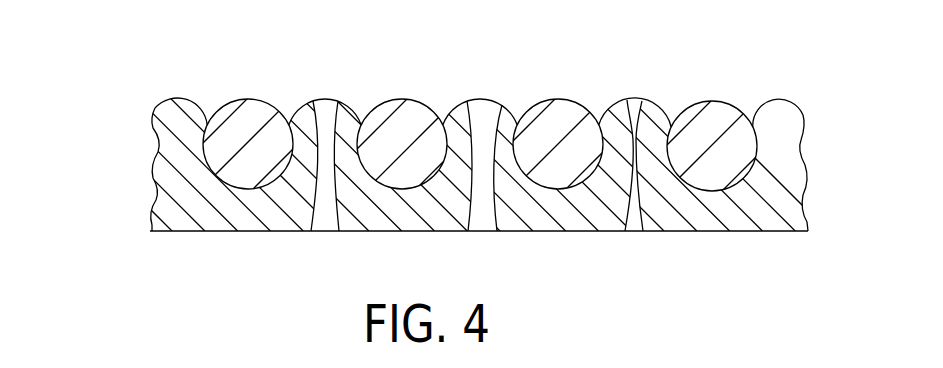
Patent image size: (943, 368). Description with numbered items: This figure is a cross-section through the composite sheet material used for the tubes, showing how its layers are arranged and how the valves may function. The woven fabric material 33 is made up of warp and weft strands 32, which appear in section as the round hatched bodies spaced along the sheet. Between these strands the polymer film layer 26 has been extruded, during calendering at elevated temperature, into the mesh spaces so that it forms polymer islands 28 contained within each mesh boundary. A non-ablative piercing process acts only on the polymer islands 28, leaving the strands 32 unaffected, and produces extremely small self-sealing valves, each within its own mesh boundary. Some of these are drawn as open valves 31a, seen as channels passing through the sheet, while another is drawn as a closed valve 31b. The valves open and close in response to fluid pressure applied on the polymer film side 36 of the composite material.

The polymer film layer 26 is at (194, 203).
The polymer islands 28 is at (303, 135).
The open valves 31a is at (401, 158).
The closed valves 31b is at (635, 110).
The warp and weft strands 32 is at (255, 137).
The woven fabric material 33 is at (733, 104).
The polymer film side 36 is at (320, 233).